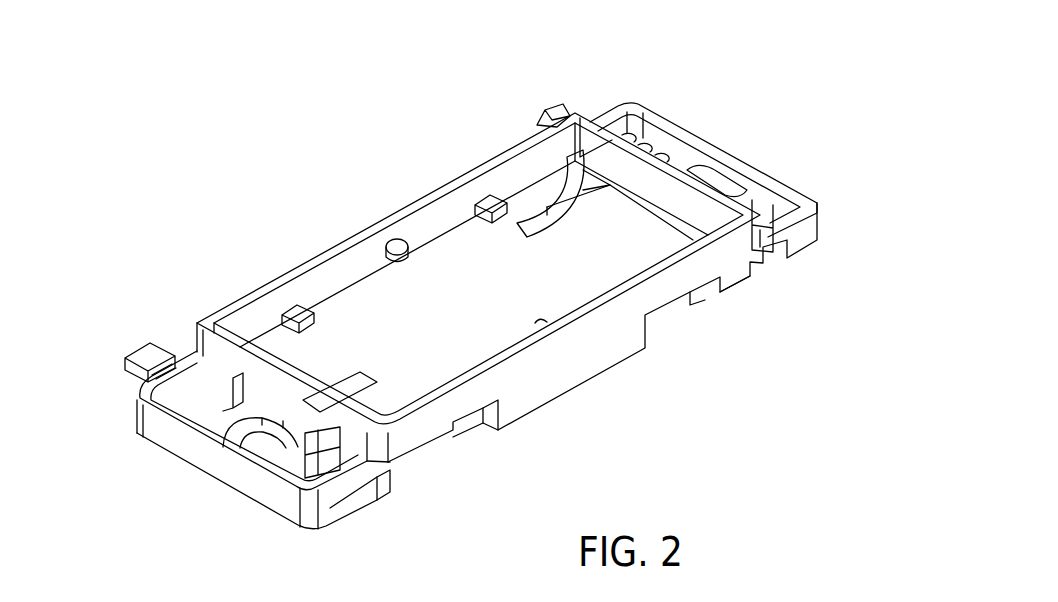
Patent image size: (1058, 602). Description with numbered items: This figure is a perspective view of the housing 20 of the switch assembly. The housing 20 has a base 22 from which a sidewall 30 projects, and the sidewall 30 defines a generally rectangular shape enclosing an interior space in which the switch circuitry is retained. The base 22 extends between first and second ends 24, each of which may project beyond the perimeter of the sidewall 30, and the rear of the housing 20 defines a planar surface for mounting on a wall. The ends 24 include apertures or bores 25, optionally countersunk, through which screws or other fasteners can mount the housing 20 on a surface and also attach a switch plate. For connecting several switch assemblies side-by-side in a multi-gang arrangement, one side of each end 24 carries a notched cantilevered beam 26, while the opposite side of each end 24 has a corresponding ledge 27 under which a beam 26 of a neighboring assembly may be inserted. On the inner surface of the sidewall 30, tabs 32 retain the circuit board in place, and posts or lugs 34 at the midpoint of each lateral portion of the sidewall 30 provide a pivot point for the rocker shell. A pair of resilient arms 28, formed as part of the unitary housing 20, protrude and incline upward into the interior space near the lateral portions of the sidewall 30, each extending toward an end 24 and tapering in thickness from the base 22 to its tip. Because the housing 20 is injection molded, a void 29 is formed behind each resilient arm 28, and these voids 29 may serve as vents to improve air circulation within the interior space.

The housing 20 is at (180, 78).
The base 22 is at (414, 347).
The first and second ends 24 is at (713, 162).
The apertures or bores 25 is at (720, 180).
The notched cantilevered beam 26 is at (552, 117).
The ledge 27 is at (767, 213).
The resilient arms 28 is at (543, 185).
The void 29 is at (587, 193).
The sidewall 30 is at (255, 318).
The tabs 32 is at (483, 203).
The posts or lugs 34 is at (390, 245).